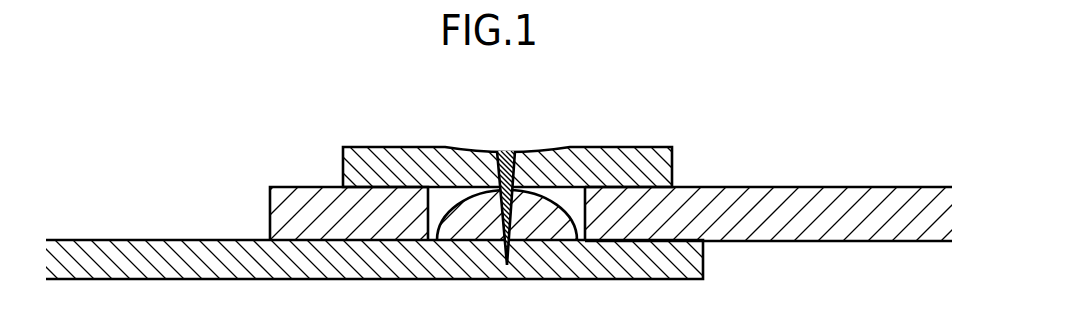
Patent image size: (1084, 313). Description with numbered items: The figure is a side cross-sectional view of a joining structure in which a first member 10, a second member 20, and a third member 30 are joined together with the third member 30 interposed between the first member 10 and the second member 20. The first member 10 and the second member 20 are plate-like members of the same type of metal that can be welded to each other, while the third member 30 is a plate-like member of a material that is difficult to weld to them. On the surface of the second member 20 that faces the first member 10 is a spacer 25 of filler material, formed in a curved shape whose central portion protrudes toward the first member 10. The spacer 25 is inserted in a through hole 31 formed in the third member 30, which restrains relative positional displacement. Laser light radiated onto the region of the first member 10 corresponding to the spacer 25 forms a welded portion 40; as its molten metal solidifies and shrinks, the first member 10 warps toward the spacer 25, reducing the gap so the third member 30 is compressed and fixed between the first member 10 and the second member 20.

The first member 10 is at (633, 147).
The second member 20 is at (136, 240).
The spacer 25 is at (460, 197).
The third member 30 is at (799, 187).
The through hole 31 is at (585, 208).
The welded portion 40 is at (498, 163).